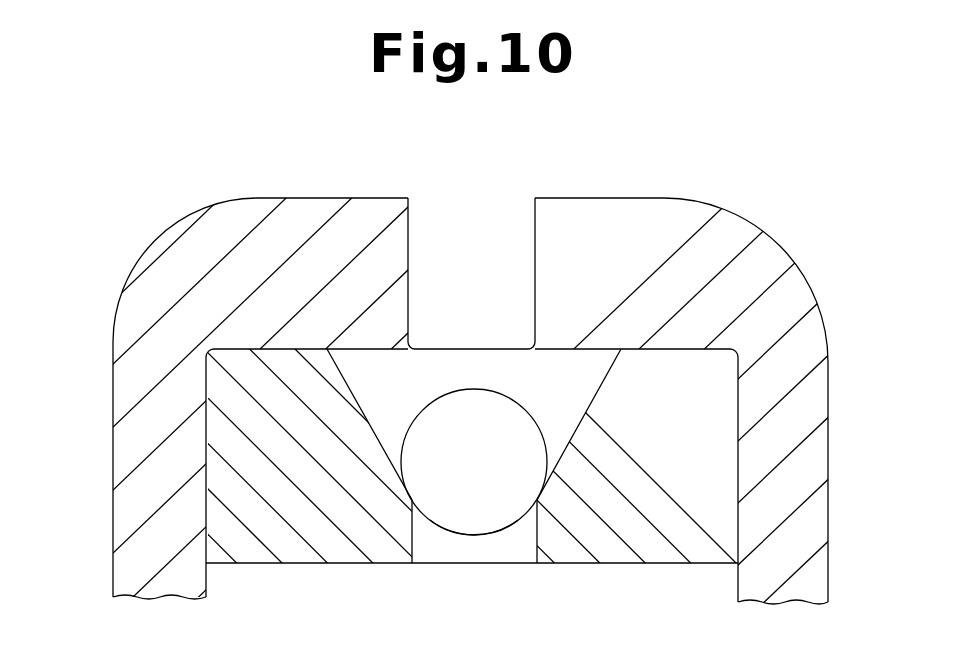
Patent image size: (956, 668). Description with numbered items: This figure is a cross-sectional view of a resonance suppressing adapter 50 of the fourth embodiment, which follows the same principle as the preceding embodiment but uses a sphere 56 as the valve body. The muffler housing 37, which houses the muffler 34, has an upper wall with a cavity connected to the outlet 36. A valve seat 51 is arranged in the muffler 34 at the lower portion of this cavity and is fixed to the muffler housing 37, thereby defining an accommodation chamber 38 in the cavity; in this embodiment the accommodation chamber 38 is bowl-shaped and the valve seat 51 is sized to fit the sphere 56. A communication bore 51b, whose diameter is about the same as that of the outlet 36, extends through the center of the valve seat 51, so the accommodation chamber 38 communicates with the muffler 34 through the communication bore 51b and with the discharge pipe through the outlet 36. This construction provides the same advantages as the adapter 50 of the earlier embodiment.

The muffler housing 37 is at (250, 214).
The outlet 36 is at (535, 226).
The accommodation chamber 38 is at (366, 366).
The adapter 50 is at (468, 387).
The valve seat 51 is at (665, 556).
The communication bore 51b is at (533, 541).
The sphere 56 is at (470, 520).
The muffler 34 is at (346, 618).